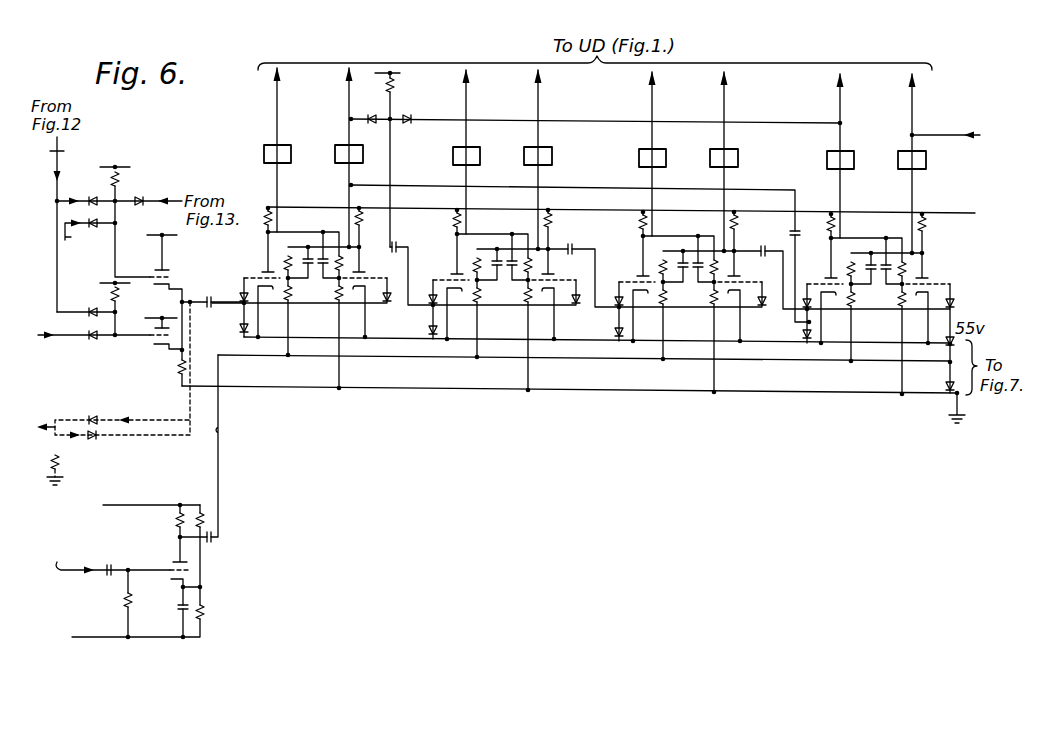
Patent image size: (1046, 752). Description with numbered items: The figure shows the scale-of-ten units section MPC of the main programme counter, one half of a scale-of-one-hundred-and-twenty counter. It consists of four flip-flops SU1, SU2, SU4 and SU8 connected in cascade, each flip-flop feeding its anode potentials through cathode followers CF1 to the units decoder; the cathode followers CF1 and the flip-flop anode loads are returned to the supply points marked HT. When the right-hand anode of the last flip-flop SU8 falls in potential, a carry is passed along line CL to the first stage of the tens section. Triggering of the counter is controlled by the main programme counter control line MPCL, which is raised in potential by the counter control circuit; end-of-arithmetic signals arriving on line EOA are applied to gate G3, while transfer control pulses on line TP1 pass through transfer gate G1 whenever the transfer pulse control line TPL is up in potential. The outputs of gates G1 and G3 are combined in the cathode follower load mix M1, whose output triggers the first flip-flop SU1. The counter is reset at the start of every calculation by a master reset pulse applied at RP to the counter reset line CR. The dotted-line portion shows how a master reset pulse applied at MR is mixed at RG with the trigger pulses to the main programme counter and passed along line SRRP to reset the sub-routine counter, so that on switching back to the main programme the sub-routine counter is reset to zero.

The cathode followers CF1 is at (340, 149).
The flip-flop SU1 is at (262, 205).
The flip-flop SU2 is at (551, 177).
The flip-flop SU4 is at (636, 177).
The flip-flop SU8 is at (934, 271).
The scale-of-ten units section of main programme counter MPC is at (744, 116).
The carry line CL is at (966, 139).
The high tension supply HT is at (564, 290).
The main programme counter control line MPCL is at (78, 224).
The transfer gate G1 is at (129, 192).
The transfer pulse line TP1 is at (160, 200).
The transfer pulse control line TPL is at (88, 252).
The end-of-arithmetic signal line EOA is at (87, 337).
The gate G3 is at (113, 342).
The cathode follower load mix M1 is at (150, 345).
The sub-routine reset pulse line SRRP is at (110, 393).
The master reset input MR is at (134, 426).
The reset mixing gate RG is at (90, 444).
The counter reset line CR is at (254, 448).
The reset pulse input RP is at (122, 572).